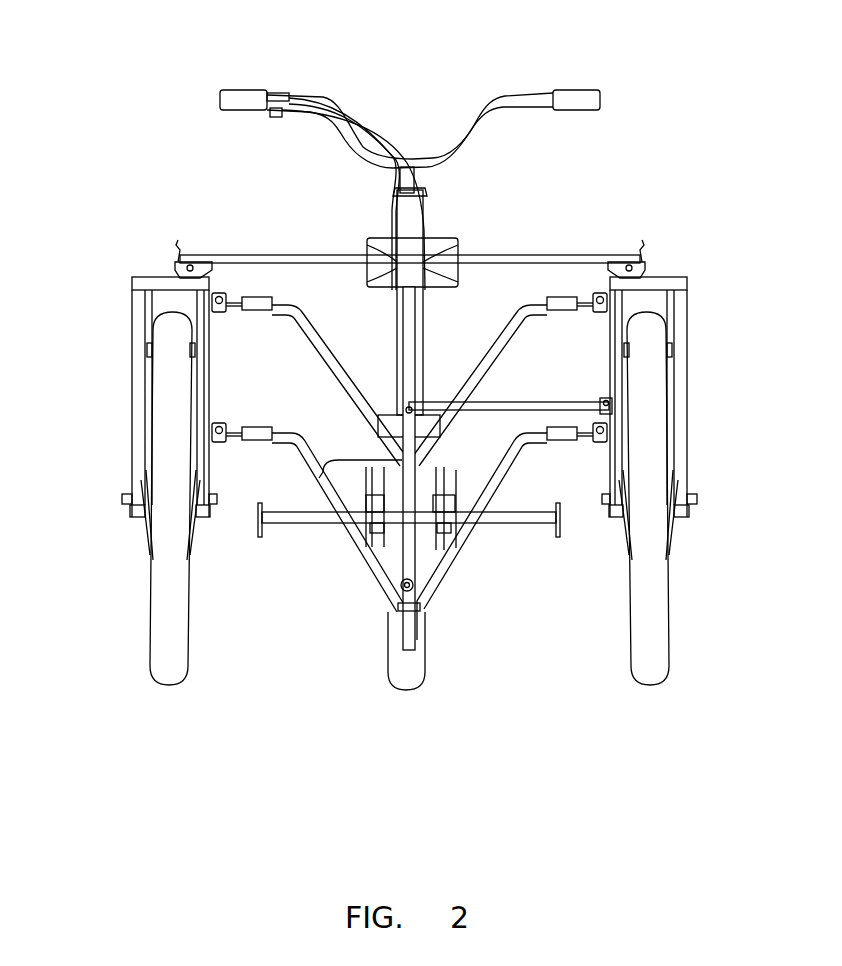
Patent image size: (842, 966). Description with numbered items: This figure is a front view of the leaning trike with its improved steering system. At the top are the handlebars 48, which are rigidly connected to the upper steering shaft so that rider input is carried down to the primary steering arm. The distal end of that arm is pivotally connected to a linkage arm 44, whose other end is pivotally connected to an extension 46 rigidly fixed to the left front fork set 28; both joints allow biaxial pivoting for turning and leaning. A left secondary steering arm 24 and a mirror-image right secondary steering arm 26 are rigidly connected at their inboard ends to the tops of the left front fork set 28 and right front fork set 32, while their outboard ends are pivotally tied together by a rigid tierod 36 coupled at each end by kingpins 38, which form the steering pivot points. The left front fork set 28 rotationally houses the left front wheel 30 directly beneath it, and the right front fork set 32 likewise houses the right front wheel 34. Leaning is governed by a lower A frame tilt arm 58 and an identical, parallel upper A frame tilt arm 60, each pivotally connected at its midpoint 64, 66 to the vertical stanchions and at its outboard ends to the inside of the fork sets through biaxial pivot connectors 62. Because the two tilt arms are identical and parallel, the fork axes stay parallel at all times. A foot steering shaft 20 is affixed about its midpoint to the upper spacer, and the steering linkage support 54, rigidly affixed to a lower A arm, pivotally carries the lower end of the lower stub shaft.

The foot steering shaft 20 is at (514, 524).
The left secondary steering arm 24 is at (642, 262).
The right secondary steering arm 26 is at (176, 256).
The left front fork set 28 is at (682, 298).
The left front wheel 30 is at (665, 655).
The right front fork set 32 is at (132, 298).
The right front wheel 34 is at (170, 672).
The tierod 36 is at (525, 253).
The kingpins 38 is at (198, 258).
The linkage arm 44 is at (522, 401).
The extension 46 is at (612, 405).
The handlebars 48 is at (496, 97).
The steering linkage support 54 is at (447, 440).
The lower A frame tilt arm 58 is at (455, 565).
The upper A frame tilt arm 60 is at (340, 358).
The biaxial pivot connectors 62 is at (223, 306).
The midpoint pivotal connection of lower A frame tilt arm 64 is at (403, 586).
The midpoint pivotal connection of upper A frame tilt arm 66 is at (420, 456).